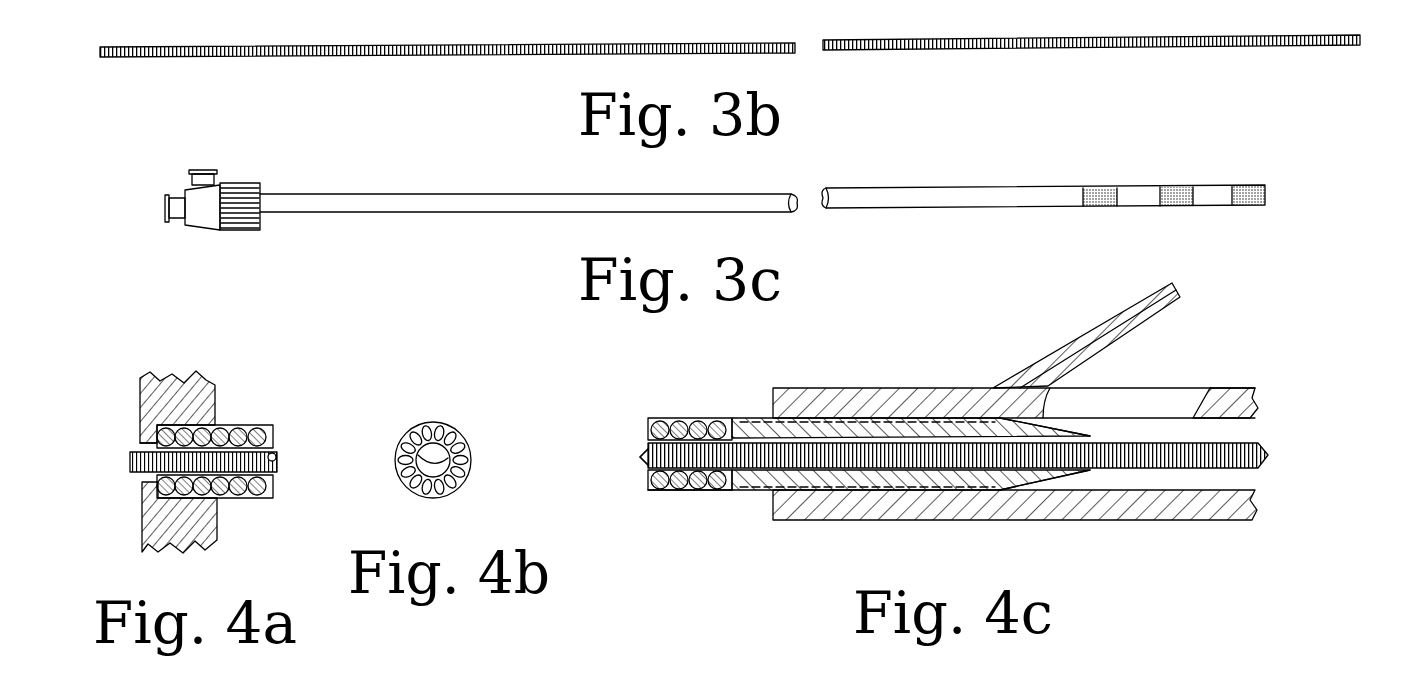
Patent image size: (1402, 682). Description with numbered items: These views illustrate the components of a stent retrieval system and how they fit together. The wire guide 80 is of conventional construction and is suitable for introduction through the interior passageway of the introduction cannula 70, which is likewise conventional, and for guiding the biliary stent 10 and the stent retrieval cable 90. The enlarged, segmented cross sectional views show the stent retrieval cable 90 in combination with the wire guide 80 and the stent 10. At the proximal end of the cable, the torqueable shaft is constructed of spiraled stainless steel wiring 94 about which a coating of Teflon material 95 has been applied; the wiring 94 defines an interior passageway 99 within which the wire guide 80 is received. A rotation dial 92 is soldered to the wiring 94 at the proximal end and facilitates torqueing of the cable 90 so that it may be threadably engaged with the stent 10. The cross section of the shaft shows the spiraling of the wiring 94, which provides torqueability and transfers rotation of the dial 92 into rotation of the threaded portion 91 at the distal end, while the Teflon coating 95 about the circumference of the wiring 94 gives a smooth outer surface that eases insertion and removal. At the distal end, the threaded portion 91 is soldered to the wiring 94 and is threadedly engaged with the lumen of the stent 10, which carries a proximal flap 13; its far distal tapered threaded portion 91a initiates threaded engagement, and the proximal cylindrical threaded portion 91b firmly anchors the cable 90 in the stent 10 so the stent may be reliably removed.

In FIG. 3b, the introduction cannula 70 is at (873, 43).
In FIG. 3c, the introduction cannula 70 is at (867, 188).
In FIG. 4c, the biliary stent 10 is at (920, 388).
In FIG. 4c, the proximal flap 13 is at (1120, 312).
In FIG. 4a, the wire guide 80 is at (135, 477).
In FIG. 4c, the wire guide 80 is at (1220, 470).
In FIG. 4c, the stent retrieval cable 90 is at (713, 493).
In FIG. 4c, the threaded portion 91 is at (740, 418).
In FIG. 4c, the tapered threaded portion 91a is at (1065, 425).
In FIG. 4c, the cylindrical threaded portion 91b is at (843, 418).
In FIG. 4a, the rotation dial 92 is at (217, 403).
In FIG. 4a, the spiraled stainless steel wiring 94 is at (270, 484).
In FIG. 4b, the spiraled stainless steel wiring 94 is at (457, 430).
In FIG. 4c, the spiraled stainless steel wiring 94 is at (650, 437).
In FIG. 4a, the Teflon coating 95 is at (243, 425).
In FIG. 4b, the Teflon coating 95 is at (450, 490).
In FIG. 4c, the Teflon coating 95 is at (683, 420).
In FIG. 4a, the interior passageway 99 is at (153, 443).
In FIG. 4c, the interior passageway 99 is at (648, 466).